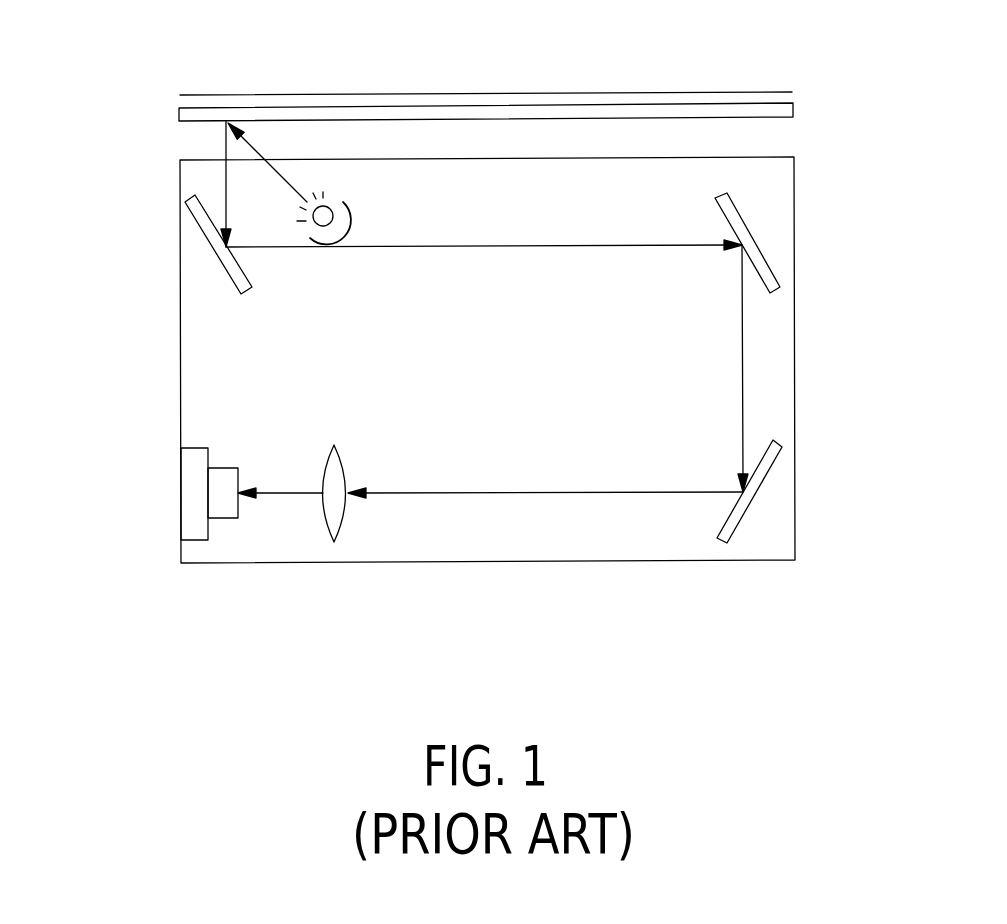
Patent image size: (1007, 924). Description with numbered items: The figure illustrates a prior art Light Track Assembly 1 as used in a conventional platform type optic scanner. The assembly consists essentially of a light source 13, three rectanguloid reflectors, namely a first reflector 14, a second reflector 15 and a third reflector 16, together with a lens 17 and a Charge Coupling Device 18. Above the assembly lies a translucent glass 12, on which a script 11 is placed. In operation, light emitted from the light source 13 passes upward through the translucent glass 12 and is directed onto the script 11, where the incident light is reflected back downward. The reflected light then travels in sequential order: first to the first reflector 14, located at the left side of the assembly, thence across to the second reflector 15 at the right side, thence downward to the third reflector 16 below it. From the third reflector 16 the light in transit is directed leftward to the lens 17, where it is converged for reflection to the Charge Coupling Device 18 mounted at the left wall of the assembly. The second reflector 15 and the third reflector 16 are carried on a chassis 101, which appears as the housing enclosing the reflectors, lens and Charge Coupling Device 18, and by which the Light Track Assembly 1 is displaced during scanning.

The Light Track Assembly 1 is at (137, 180).
The script 11 is at (772, 90).
The translucent glass 12 is at (793, 107).
The chassis 101 is at (795, 365).
The light source 13 is at (348, 217).
The first reflector 14 is at (207, 240).
The second reflector 15 is at (768, 260).
The third reflector 16 is at (752, 485).
The lens 17 is at (337, 520).
The Charge Coupling Device 18 is at (218, 513).